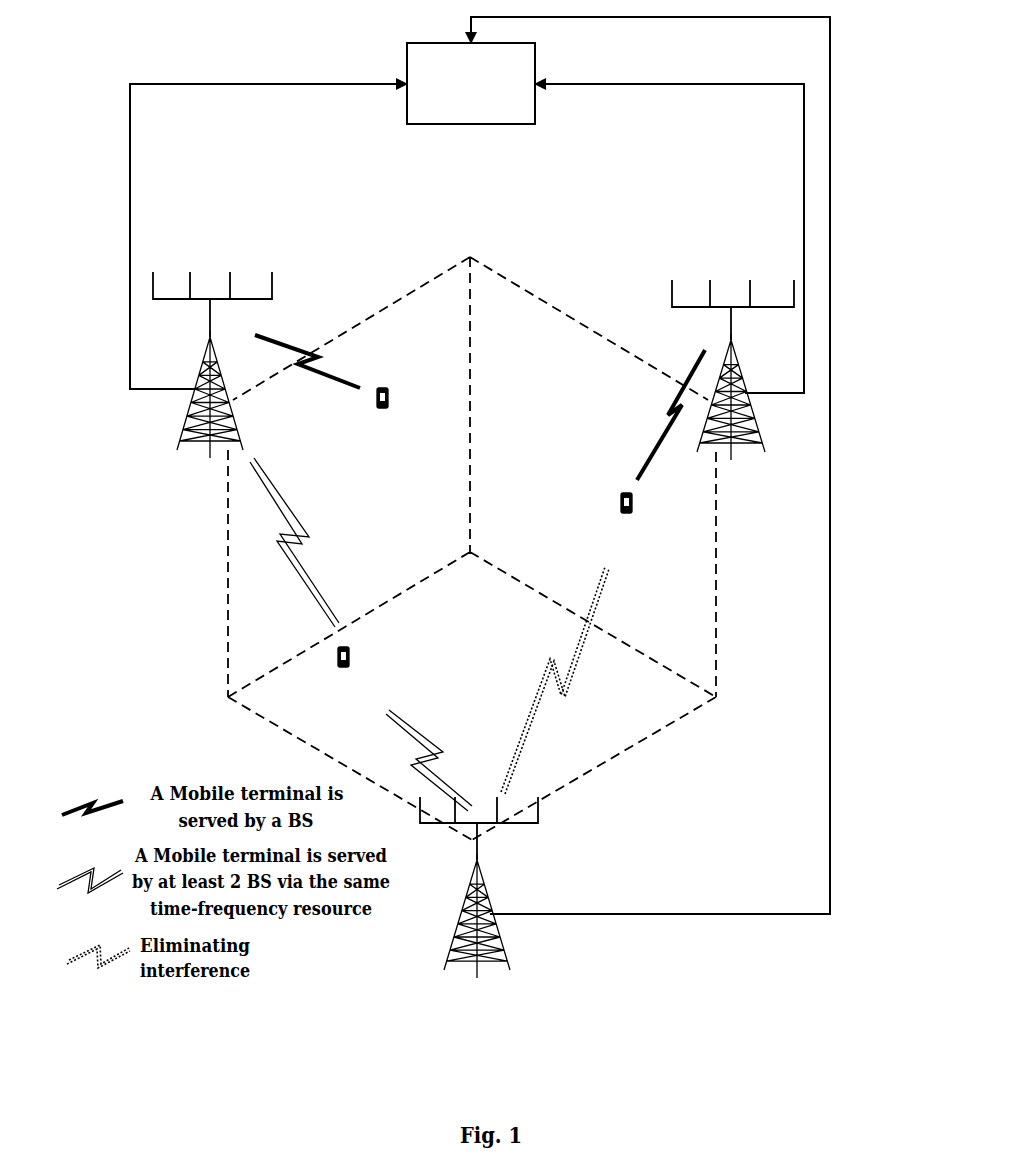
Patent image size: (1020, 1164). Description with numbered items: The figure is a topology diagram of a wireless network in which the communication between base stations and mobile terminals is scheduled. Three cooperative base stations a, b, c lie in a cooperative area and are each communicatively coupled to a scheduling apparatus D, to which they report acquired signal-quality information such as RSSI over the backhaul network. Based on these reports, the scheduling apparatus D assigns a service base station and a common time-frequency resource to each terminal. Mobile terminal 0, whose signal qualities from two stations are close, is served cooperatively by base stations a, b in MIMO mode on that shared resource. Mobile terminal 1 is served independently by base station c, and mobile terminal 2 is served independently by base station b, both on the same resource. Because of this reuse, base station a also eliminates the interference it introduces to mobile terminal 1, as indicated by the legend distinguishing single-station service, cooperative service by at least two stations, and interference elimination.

The scheduling apparatus D is at (471, 83).
The base station a is at (480, 915).
The base station b is at (191, 388).
The base station c is at (754, 398).
The mobile terminal 0 is at (361, 634).
The mobile terminal 1 is at (603, 572).
The mobile terminal 2 is at (346, 398).